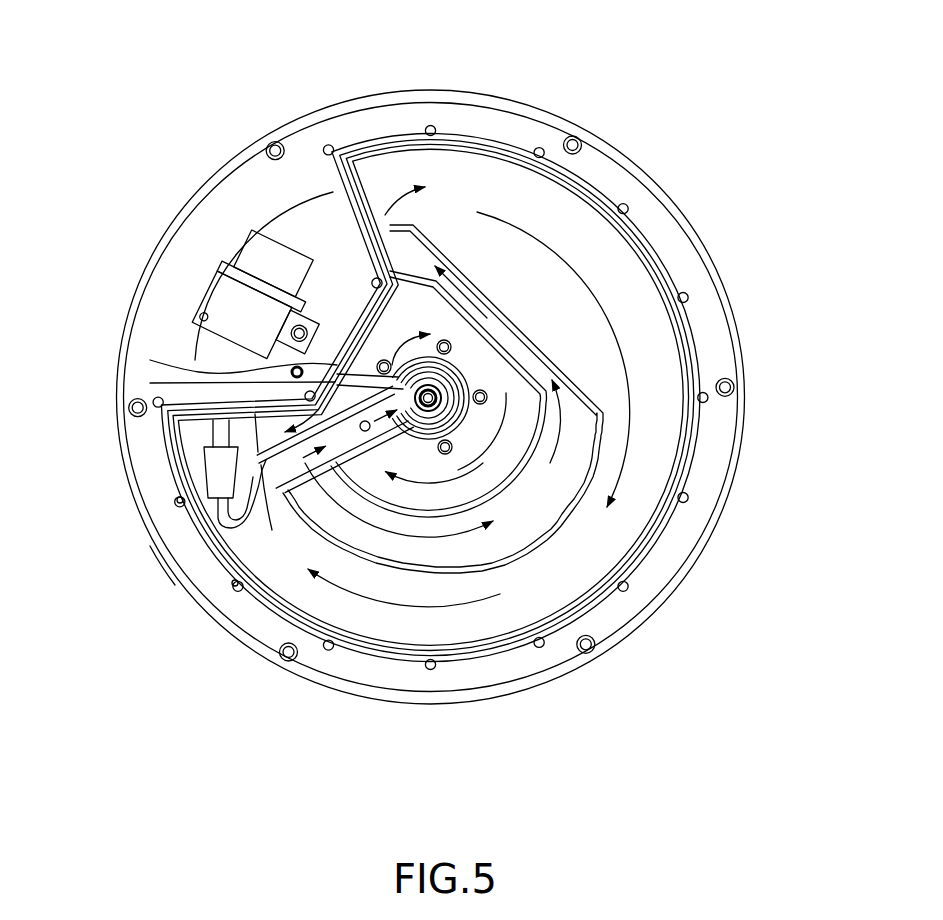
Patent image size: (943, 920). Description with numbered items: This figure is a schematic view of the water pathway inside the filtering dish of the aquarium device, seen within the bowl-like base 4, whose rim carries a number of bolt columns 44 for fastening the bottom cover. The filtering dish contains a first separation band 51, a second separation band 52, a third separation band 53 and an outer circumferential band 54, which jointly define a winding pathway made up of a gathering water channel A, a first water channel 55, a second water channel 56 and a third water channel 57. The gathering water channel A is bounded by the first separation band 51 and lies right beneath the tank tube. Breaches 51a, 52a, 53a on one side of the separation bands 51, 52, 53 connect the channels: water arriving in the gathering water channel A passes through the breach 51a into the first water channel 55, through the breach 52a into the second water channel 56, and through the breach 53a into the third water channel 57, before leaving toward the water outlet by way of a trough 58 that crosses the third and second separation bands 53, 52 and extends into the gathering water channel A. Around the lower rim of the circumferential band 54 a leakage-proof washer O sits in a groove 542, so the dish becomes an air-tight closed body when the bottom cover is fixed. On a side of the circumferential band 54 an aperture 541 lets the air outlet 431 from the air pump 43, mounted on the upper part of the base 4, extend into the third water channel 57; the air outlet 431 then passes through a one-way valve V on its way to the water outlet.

The base 4 is at (362, 86).
The bolt columns 44 is at (264, 149).
The air pump 43 is at (222, 290).
The air outlet 431 is at (232, 580).
The first separation band 51 is at (462, 380).
The breach 51a is at (150, 358).
The second separation band 52 is at (545, 427).
The breach 52a is at (205, 462).
The third separation band 53 is at (597, 458).
The breach 53a is at (386, 220).
The circumferential band 54 is at (284, 614).
The aperture 541 is at (232, 422).
The groove 542 is at (178, 501).
The first water channel 55 is at (512, 405).
The second water channel 56 is at (602, 522).
The third water channel 57 is at (608, 532).
The trough 58 is at (345, 378).
The gathering water channel A is at (480, 352).
The one-way valve V is at (204, 470).
The leakage-proof washer O is at (152, 546).